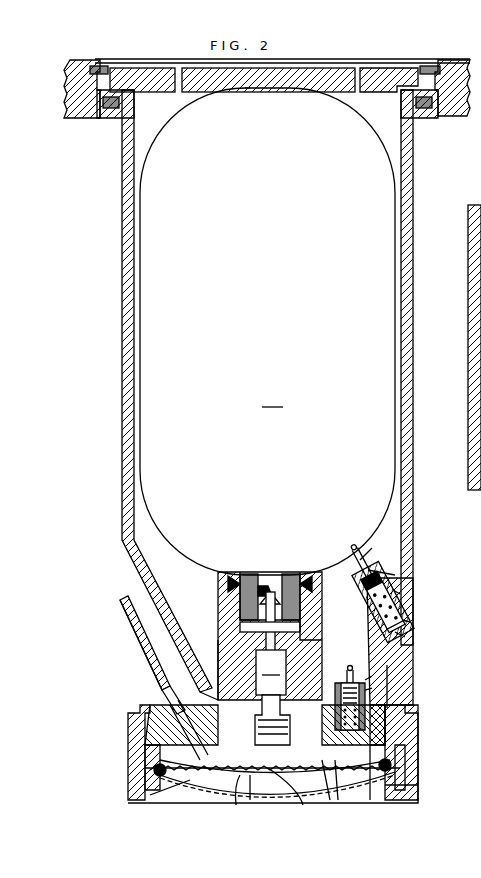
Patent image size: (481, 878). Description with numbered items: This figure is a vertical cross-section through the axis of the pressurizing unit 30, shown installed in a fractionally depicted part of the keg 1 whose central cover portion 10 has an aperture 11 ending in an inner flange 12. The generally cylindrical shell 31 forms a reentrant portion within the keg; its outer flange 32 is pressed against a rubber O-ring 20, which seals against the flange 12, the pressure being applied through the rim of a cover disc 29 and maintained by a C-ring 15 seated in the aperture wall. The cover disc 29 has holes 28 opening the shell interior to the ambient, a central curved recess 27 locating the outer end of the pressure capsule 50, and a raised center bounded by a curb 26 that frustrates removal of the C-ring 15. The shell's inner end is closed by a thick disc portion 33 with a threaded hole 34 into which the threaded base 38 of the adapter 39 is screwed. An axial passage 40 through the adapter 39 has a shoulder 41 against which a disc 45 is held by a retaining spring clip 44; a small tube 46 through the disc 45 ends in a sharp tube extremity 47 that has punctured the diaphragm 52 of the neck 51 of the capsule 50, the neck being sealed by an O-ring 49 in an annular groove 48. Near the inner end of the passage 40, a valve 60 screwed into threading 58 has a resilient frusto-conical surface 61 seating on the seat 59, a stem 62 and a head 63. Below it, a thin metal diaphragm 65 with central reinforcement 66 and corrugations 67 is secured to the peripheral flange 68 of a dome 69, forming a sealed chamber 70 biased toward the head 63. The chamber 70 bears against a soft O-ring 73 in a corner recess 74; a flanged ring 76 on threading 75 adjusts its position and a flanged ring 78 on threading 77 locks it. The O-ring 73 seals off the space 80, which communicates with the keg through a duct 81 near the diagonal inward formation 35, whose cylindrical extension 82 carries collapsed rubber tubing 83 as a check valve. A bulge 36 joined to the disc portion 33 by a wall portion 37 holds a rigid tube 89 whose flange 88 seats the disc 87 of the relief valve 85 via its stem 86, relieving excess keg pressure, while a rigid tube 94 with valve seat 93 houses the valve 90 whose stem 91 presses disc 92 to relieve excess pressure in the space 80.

The housing block 1 is at (460, 61).
The central cover portion 10 is at (70, 119).
The aperture 11 is at (98, 114).
The flange 12 is at (402, 156).
The C-ring 15 is at (100, 66).
The rubber O-ring 20 is at (112, 108).
The curb 26 is at (418, 70).
The central curved recess 27 is at (267, 92).
The holes 28 is at (165, 66).
The cover disc 29 is at (335, 78).
The pressurizing unit 30 is at (412, 182).
The generally cylindrical shell 31 is at (122, 298).
The flange 32 is at (400, 92).
The disc portion 33 is at (410, 711).
The threaded hole 34 is at (322, 800).
The diagonal inward formation 35 is at (158, 614).
The bulge 36 is at (408, 603).
The wall portion 37 is at (377, 643).
The threaded base 38 is at (230, 800).
The adapter 39 is at (235, 600).
The passage 40 is at (322, 606).
The shoulder 41 is at (218, 650).
The retaining spring clip 44 is at (319, 627).
The disc 45 is at (234, 628).
The small tube 46 is at (248, 617).
The sharp tube extremity 47 is at (282, 572).
The annular groove 48 is at (230, 582).
The rubber O-ring 49 is at (238, 570).
The pressure capsule 50 is at (272, 399).
The neck 51 is at (290, 573).
The diaphragm 52 is at (250, 572).
The threading 58 is at (245, 790).
The frusto-conical seat 59 is at (202, 794).
The valve 60 is at (214, 698).
The resilient frusto-conical surface 61 is at (288, 693).
The stem 62 is at (285, 786).
The head 63 is at (276, 800).
The diaphragm 65 is at (182, 786).
The central reinforcement 66 is at (339, 796).
The corrugations 67 is at (368, 796).
The peripheral flange 68 is at (388, 787).
The dome 69 is at (400, 785).
The sealed chamber 70 is at (186, 783).
The rubber O-ring 73 is at (144, 763).
The peripheral corner recess 74 is at (186, 729).
The external threading 75 is at (142, 755).
The flanged ring 76 is at (149, 770).
The external threading 77 is at (410, 728).
The flanged ring 78 is at (405, 744).
The space 80 is at (383, 758).
The duct 81 is at (161, 711).
The cylindrical extension 82 is at (136, 708).
The rubber tubing 83 is at (148, 634).
The valve 85 is at (393, 571).
The stem 86 is at (398, 592).
The disc 87 is at (406, 620).
The flange 88 is at (403, 632).
The rigid tube 89 is at (380, 556).
The valve 90 is at (372, 676).
The stem 91 is at (372, 688).
The disc 92 is at (411, 720).
The valve seat 93 is at (370, 722).
The rigid tube 94 is at (329, 695).